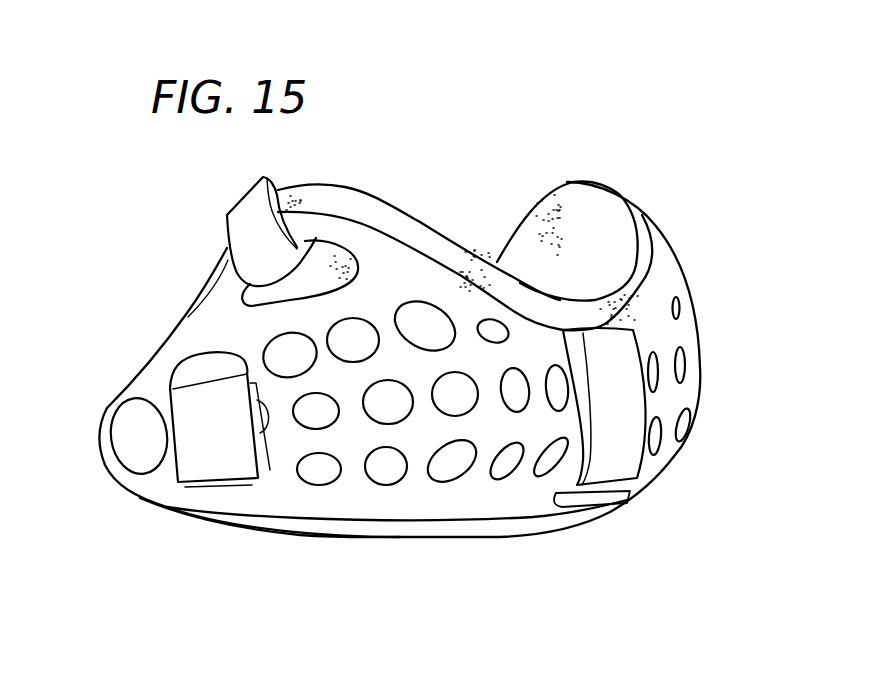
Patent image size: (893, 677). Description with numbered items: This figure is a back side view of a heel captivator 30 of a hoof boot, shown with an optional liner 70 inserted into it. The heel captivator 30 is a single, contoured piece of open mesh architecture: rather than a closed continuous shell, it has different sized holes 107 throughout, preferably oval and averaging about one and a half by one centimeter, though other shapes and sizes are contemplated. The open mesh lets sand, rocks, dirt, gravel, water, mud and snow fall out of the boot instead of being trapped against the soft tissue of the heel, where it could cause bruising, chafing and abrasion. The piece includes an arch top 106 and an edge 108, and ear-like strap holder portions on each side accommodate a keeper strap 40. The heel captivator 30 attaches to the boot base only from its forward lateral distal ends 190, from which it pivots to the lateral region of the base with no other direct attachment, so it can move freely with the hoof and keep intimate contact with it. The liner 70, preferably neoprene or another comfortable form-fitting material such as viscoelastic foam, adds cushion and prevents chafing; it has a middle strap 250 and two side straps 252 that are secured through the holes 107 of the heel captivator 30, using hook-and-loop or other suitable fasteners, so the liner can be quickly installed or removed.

The heel captivator 30 is at (385, 228).
The keeper strap 40 is at (250, 207).
The liner 70 is at (643, 240).
The arch top 106 is at (627, 320).
The holes 107 is at (686, 366).
The edge 108 is at (533, 520).
The forward lateral distal ends 190 is at (137, 387).
The middle strap 250 is at (623, 463).
The side straps 252 is at (222, 460).